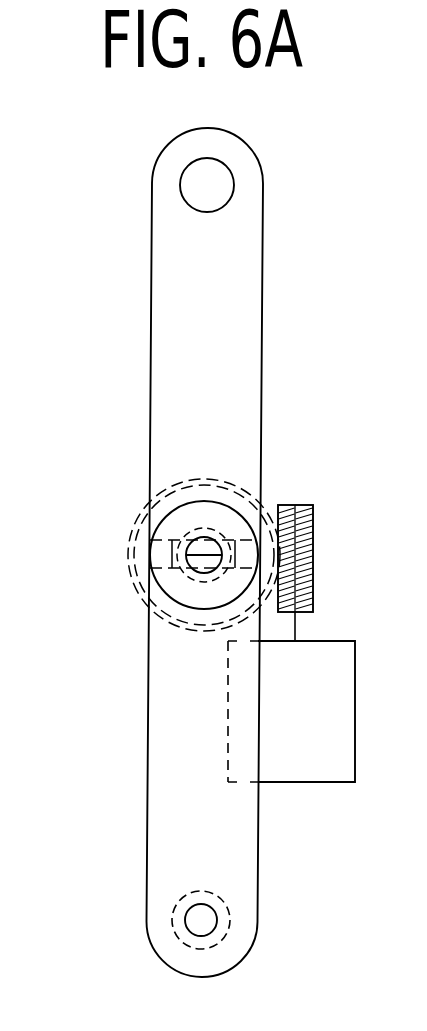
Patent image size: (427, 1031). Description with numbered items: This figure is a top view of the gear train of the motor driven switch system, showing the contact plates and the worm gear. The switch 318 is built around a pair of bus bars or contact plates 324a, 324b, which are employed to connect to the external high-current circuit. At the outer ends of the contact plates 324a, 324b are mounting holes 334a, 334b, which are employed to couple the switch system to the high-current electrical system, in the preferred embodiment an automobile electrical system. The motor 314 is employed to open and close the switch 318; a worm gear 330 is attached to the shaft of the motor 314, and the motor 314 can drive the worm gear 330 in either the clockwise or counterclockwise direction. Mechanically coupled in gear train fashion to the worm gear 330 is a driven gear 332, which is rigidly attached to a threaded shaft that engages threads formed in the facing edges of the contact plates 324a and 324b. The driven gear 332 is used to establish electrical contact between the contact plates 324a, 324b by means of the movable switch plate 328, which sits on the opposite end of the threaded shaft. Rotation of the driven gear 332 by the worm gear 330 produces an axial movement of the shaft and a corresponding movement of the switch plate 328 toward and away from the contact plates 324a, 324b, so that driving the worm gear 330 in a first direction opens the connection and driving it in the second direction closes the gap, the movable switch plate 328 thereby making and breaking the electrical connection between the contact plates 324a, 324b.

The switch 318 is at (380, 129).
The contact plate 324a is at (233, 371).
The contact plate 324b is at (207, 728).
The mounting hole 334a is at (226, 211).
The mounting hole 334b is at (202, 903).
The movable switch plate 328 is at (212, 517).
The driven gear 332 is at (138, 516).
The worm gear 330 is at (312, 558).
The motor 314 is at (323, 783).